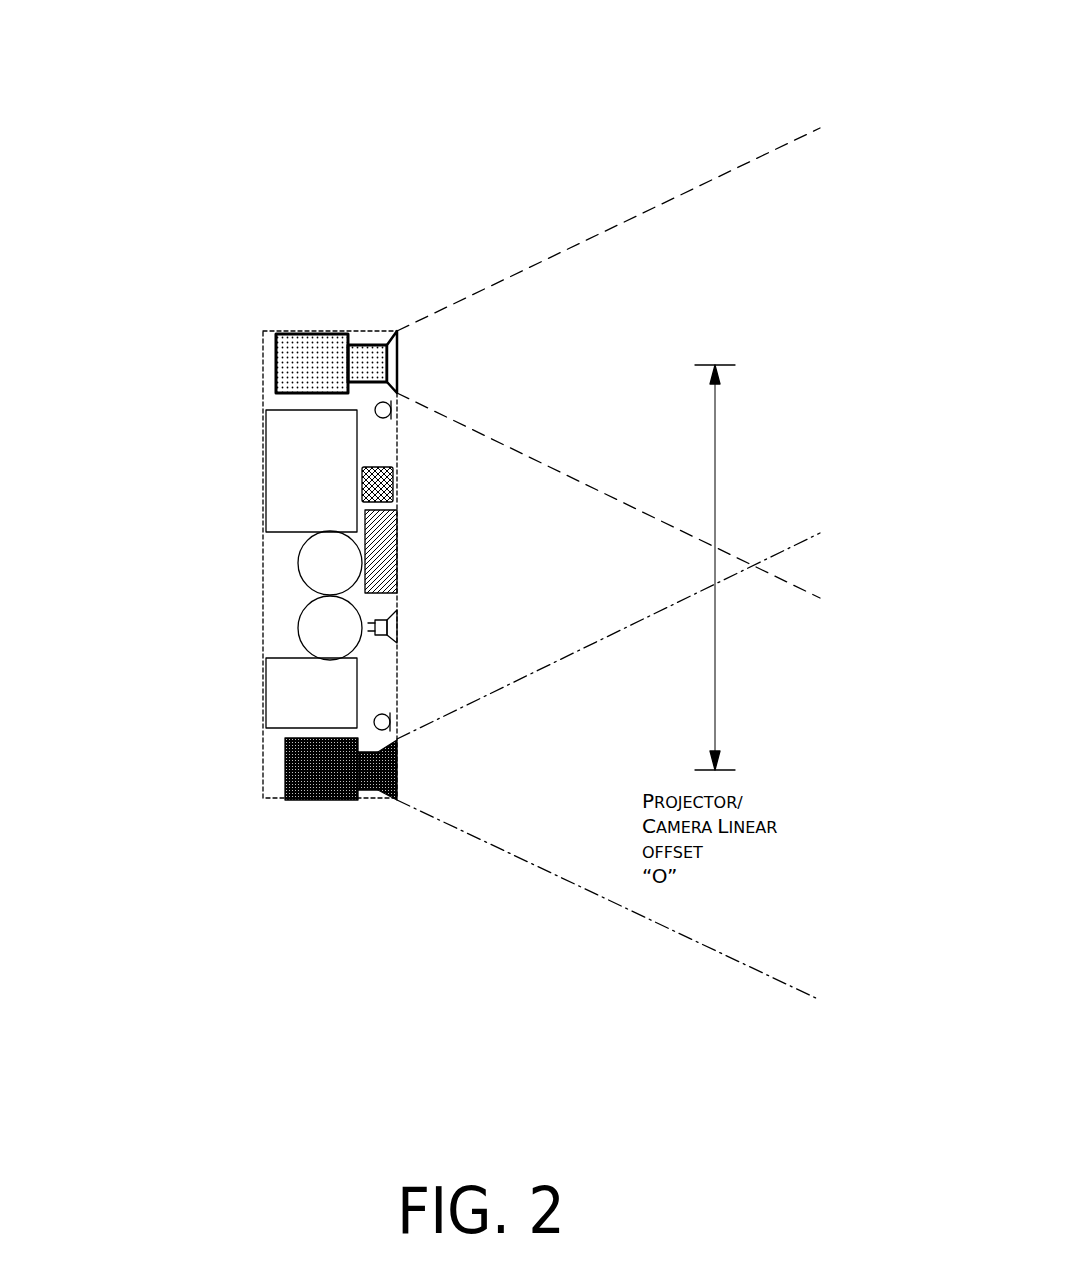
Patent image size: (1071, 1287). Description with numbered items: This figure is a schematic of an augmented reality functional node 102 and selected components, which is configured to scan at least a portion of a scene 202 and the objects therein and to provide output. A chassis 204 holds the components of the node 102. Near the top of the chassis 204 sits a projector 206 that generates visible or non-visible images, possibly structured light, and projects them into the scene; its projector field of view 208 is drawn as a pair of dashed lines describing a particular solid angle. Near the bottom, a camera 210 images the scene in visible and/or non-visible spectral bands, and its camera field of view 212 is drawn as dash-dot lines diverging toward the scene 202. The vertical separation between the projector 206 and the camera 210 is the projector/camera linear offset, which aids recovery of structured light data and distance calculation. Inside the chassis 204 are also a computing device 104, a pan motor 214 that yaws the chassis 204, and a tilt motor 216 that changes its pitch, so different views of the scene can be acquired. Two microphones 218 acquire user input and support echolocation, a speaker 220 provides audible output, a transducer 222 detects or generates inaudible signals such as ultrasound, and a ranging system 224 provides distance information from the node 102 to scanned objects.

The augmented reality functional node 102 is at (300, 331).
The computing device 104 is at (312, 470).
The scene 202 is at (860, 568).
The chassis 204 is at (330, 331).
The projector 206 is at (305, 358).
The projector field of view 208 is at (611, 222).
The camera 210 is at (313, 775).
The camera field of view 212 is at (558, 888).
The pan motor 214 is at (300, 569).
The tilt motor 216 is at (302, 633).
The microphone 218 is at (393, 406).
The speaker 220 is at (396, 626).
The transducer 222 is at (391, 470).
The ranging system 224 is at (386, 550).